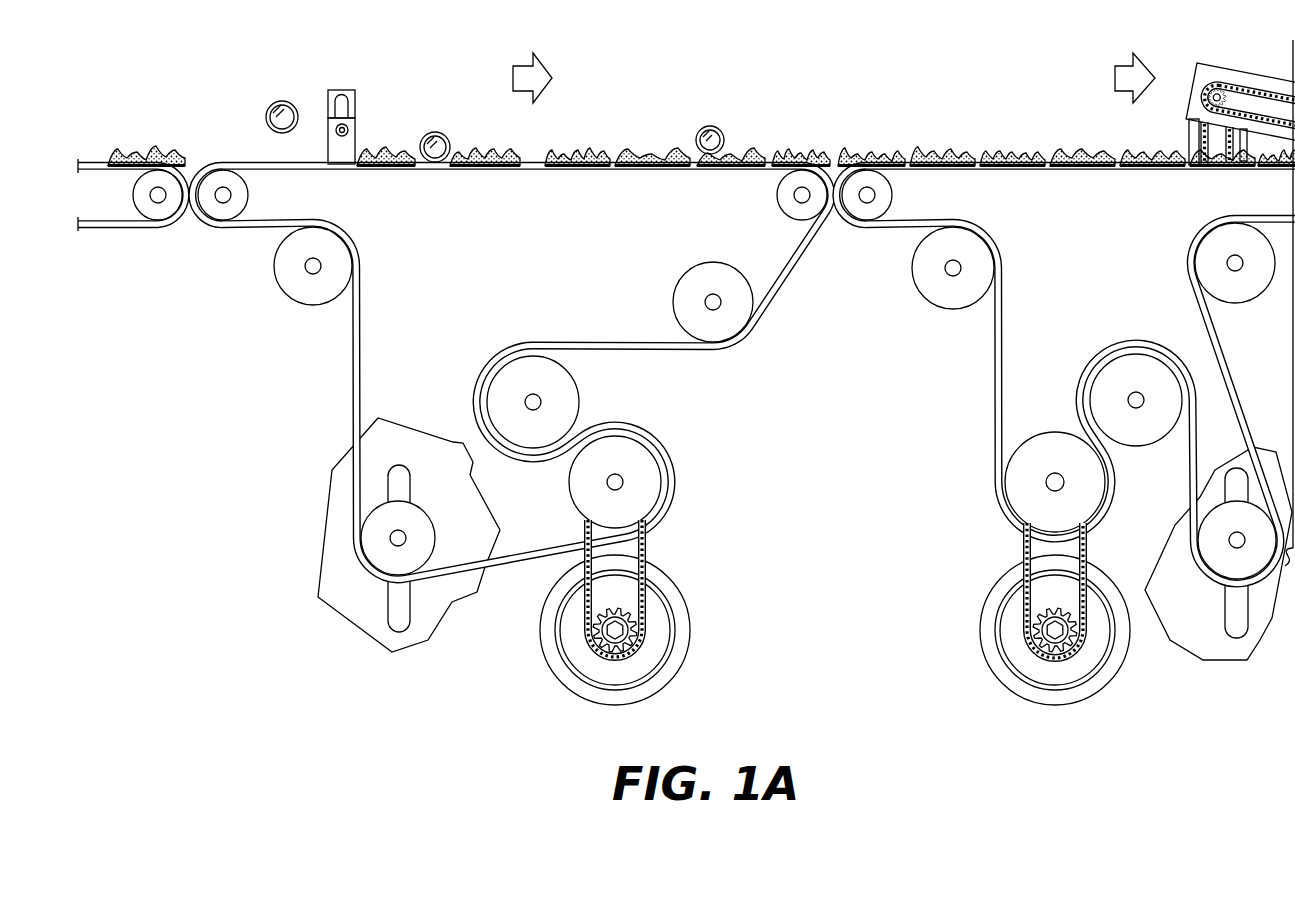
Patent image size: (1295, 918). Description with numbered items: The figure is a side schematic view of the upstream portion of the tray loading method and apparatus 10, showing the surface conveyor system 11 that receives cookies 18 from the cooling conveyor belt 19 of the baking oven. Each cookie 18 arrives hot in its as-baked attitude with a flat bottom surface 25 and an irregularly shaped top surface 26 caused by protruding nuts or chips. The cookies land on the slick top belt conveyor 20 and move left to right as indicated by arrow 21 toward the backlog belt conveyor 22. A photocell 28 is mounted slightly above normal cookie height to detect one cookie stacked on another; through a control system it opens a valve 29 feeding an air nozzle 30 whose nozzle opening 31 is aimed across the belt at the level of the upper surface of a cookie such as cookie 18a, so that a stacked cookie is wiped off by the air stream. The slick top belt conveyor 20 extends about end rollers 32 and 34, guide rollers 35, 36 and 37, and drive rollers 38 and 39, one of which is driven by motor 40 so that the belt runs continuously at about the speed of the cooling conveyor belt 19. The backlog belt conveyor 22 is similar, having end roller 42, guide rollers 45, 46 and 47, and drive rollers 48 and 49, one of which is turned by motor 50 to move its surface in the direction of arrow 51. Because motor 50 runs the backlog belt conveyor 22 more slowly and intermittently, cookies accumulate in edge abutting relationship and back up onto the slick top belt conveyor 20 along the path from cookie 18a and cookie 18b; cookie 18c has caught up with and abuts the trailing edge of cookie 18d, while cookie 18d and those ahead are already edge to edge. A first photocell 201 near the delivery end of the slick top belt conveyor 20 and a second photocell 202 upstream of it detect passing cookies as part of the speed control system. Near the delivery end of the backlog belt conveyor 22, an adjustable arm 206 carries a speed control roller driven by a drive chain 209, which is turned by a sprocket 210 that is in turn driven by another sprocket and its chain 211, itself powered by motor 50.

The tray loading method and apparatus 10 is at (701, 66).
The surface conveyor system 11 is at (901, 133).
The cookies 18 is at (182, 146).
The cookie 18a is at (392, 140).
The cookie 18b is at (500, 145).
The cookie 18c is at (603, 145).
The cookie 18d is at (650, 145).
The cooling conveyor belt 19 is at (84, 162).
The slick top belt conveyor 20 is at (532, 172).
The arrow 21 is at (523, 68).
The backlog belt conveyor 22 is at (1068, 173).
The flat bottom surface 25 is at (131, 167).
The irregularly shaped top surface 26 is at (150, 148).
The photocell 28 is at (278, 102).
The valve 29 is at (355, 97).
The air nozzle 30 is at (328, 150).
The nozzle opening 31 is at (350, 128).
The end roller 32 is at (241, 183).
The end roller 34 is at (784, 190).
The guide roller 35 is at (302, 290).
The guide roller 36 is at (420, 513).
The guide roller 37 is at (696, 278).
The drive roller 38 is at (648, 447).
The drive roller 39 is at (507, 362).
The motor 40 is at (547, 645).
The end roller 42 is at (884, 204).
The guide roller 45 is at (942, 290).
The guide roller 46 is at (1210, 560).
The guide roller 47 is at (1238, 298).
The drive roller 48 is at (1118, 354).
The drive roller 49 is at (1042, 437).
The motor 50 is at (996, 597).
The arrow 51 is at (1127, 68).
The photocell 201 is at (720, 128).
The photocell 202 is at (442, 133).
The adjustable arm 206 is at (1222, 72).
The drive chain 209 is at (1241, 143).
The sprocket 210 is at (1250, 81).
The chain 211 is at (1190, 140).